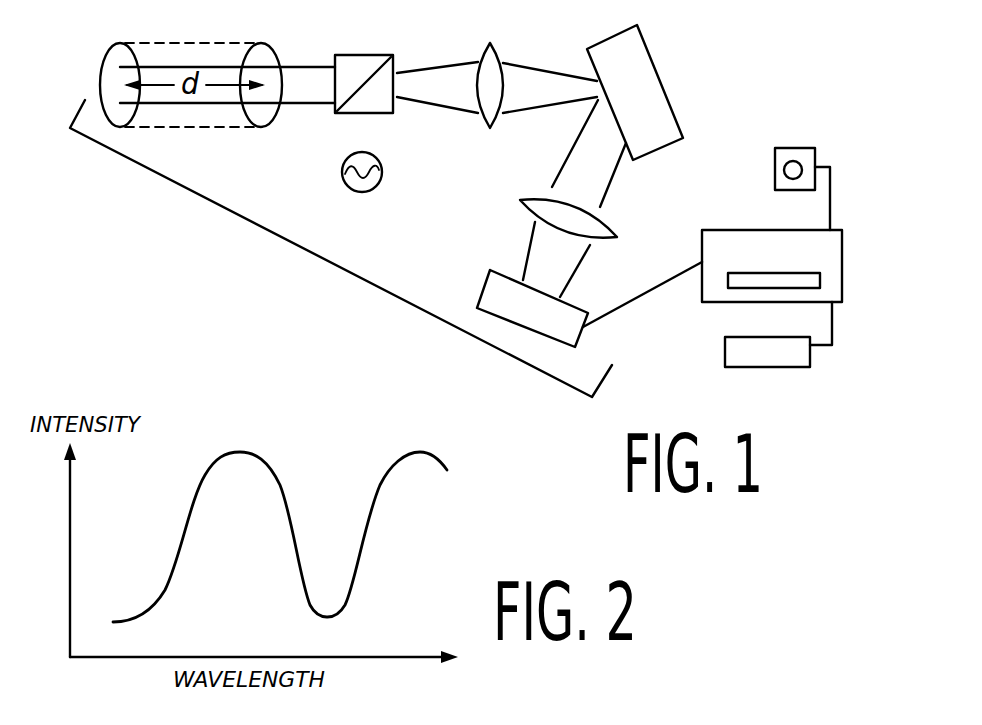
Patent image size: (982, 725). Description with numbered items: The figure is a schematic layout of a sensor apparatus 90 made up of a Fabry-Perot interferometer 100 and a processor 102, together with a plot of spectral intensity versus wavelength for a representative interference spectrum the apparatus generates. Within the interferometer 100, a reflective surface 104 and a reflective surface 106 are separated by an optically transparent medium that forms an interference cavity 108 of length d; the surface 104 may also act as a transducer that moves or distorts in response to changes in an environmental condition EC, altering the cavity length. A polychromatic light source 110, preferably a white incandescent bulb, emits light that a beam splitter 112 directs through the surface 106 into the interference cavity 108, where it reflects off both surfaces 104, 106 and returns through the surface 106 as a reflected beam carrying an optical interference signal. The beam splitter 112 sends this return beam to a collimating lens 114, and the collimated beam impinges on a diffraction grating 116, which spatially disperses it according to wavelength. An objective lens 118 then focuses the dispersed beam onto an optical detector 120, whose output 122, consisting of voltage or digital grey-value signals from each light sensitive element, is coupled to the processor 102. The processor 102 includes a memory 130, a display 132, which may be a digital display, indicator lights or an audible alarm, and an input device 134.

The sensor apparatus 90 is at (718, 74).
The Fabry-Perot interferometer 100 is at (312, 253).
The processor 102 is at (828, 252).
The reflective surface 104 is at (115, 55).
The reflective surface 106 is at (262, 55).
The interference cavity 108 is at (212, 112).
The polychromatic light source 110 is at (381, 183).
The beam splitter 112 is at (355, 65).
The collimating lens 114 is at (488, 50).
The diffraction grating 116 is at (628, 40).
The objective lens 118 is at (597, 230).
The optical detector 120 is at (485, 278).
The output 122 is at (653, 290).
The memory 130 is at (747, 282).
The display 132 is at (782, 358).
The input device 134 is at (788, 150).
The environmental condition EC is at (112, 80).